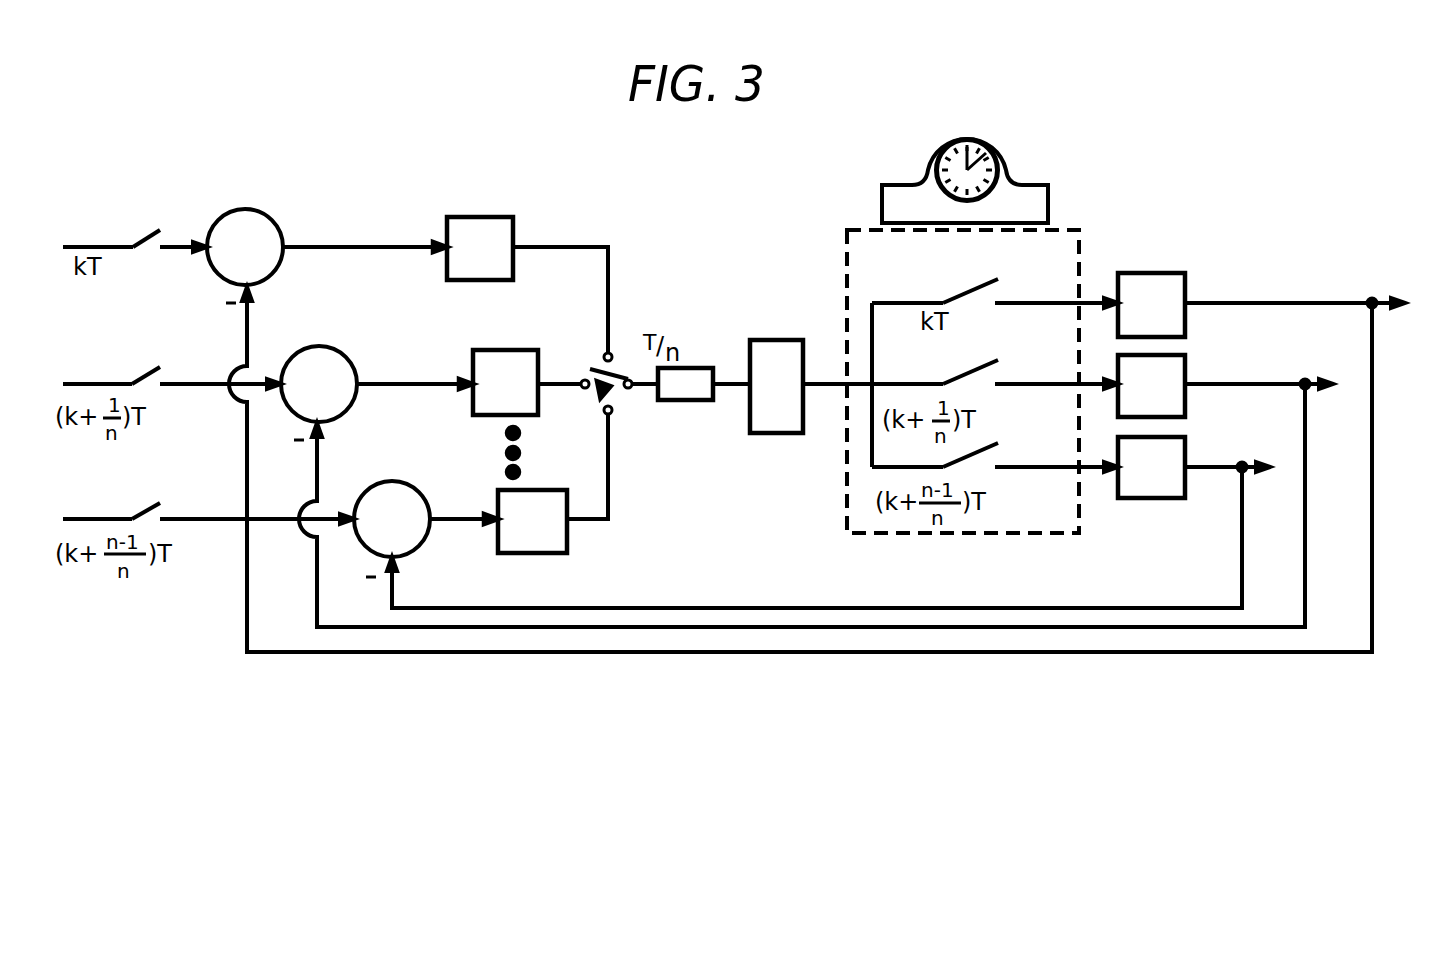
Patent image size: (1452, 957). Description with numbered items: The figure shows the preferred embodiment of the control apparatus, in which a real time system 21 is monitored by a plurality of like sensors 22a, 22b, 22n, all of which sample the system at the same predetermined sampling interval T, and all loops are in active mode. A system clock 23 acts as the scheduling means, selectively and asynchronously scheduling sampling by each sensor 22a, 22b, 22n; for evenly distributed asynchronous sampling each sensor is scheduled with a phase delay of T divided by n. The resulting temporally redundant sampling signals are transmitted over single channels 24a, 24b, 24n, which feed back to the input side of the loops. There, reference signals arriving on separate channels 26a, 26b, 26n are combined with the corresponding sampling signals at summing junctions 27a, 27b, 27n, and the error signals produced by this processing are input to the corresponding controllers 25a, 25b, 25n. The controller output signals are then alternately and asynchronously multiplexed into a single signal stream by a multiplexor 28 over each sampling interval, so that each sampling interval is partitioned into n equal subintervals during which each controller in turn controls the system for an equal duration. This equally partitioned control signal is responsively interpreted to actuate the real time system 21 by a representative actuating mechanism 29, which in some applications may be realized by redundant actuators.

The real time system 21 is at (780, 340).
The sensor 22a is at (1137, 273).
The sensor 22b is at (1185, 362).
The sensor 22n is at (1185, 447).
The system clock 23 is at (992, 133).
The single channel 24a is at (1372, 455).
The single channel 24b is at (1305, 493).
The single channel 24n is at (1242, 517).
The controller 25a is at (482, 217).
The controller 25b is at (493, 350).
The controller 25n is at (533, 490).
The separate channel 26a is at (177, 242).
The separate channel 26b is at (203, 382).
The separate channel 26n is at (194, 517).
The summing junction 27a is at (260, 213).
The summing junction 27b is at (320, 346).
The summing junction 27n is at (384, 481).
The multiplexor 28 is at (628, 362).
The actuating mechanism 29 is at (675, 400).